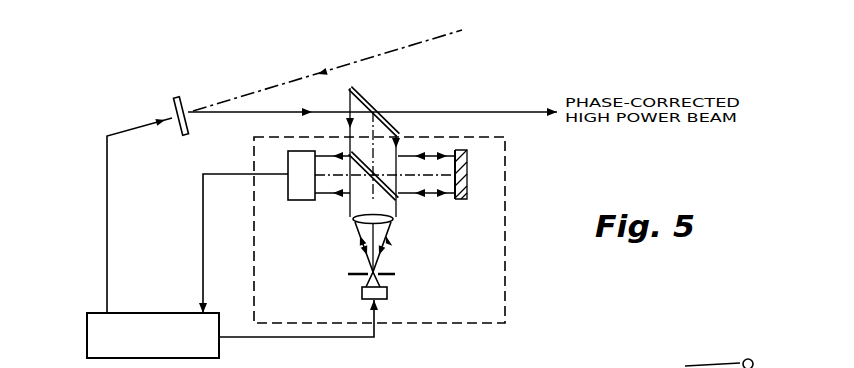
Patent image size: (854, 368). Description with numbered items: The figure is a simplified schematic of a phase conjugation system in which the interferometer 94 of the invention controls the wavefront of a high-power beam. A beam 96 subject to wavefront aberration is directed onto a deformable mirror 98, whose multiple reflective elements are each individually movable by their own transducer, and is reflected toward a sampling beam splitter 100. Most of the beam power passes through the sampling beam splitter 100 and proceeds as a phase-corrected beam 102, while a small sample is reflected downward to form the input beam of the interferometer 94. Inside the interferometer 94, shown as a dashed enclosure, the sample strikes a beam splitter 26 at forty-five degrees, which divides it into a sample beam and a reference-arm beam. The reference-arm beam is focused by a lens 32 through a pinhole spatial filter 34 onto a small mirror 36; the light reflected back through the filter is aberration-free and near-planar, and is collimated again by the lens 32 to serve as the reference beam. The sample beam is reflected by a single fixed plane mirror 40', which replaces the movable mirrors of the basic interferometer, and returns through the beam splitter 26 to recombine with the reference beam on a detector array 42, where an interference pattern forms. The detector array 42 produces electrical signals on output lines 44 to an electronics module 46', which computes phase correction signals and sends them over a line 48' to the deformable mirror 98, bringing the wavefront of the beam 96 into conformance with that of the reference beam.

The beam splitter 26 is at (392, 188).
The lens 32 is at (357, 226).
The pinhole spatial filter 34 is at (380, 278).
The mirror 36 is at (387, 296).
The fixed plane mirror 40' is at (442, 198).
The detector array 42 is at (292, 200).
The output lines 44 is at (203, 247).
The electronics module 46' is at (232, 319).
The line 48' is at (139, 215).
The interferometer 94 is at (504, 280).
The beam 96 is at (280, 83).
The deformable mirror 98 is at (170, 106).
The sampling beam splitter 100 is at (365, 96).
The phase-corrected beam 102 is at (470, 112).